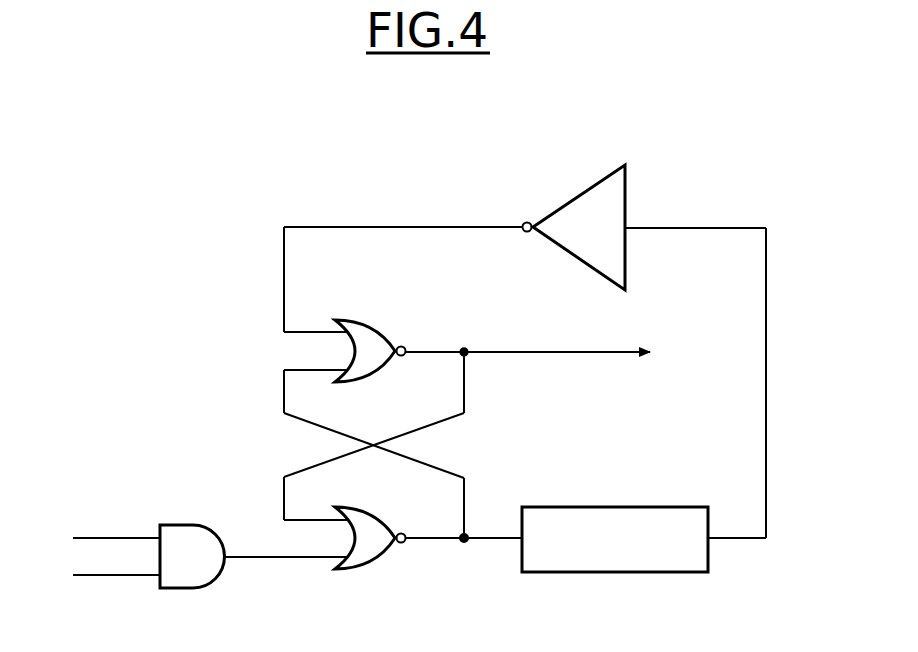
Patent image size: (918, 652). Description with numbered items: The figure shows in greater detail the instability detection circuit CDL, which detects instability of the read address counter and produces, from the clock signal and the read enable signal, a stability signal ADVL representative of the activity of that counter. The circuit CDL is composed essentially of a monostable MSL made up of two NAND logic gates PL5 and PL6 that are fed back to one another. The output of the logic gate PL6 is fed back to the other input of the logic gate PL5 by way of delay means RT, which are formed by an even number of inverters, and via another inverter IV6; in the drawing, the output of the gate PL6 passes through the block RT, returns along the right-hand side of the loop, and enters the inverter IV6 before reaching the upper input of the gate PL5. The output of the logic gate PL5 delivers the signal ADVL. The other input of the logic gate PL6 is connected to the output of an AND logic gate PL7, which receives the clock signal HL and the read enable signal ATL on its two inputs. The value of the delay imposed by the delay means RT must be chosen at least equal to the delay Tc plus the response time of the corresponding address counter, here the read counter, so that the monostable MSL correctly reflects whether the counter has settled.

The monostable MSL is at (302, 210).
The instability detection circuit CDL is at (652, 153).
The inverter IV6 is at (597, 223).
The NAND logic gate PL5 is at (365, 332).
The NAND logic gate PL6 is at (373, 537).
The AND logic gate PL7 is at (190, 557).
The delay means RT is at (585, 527).
The stability signal ADVL is at (528, 368).
The clock signal HL is at (116, 527).
The read enable signal ATL is at (116, 564).